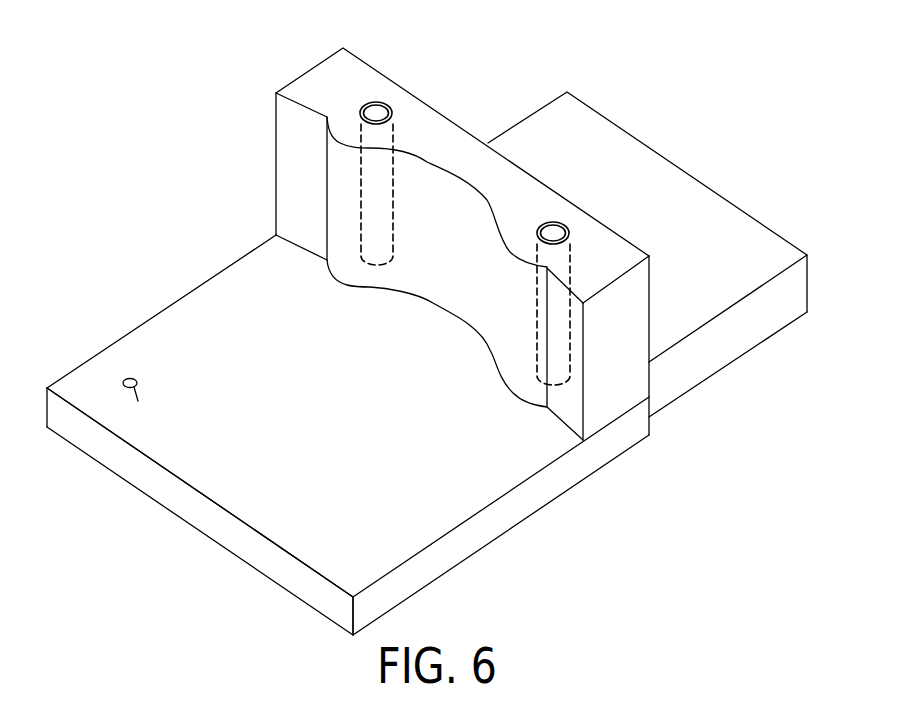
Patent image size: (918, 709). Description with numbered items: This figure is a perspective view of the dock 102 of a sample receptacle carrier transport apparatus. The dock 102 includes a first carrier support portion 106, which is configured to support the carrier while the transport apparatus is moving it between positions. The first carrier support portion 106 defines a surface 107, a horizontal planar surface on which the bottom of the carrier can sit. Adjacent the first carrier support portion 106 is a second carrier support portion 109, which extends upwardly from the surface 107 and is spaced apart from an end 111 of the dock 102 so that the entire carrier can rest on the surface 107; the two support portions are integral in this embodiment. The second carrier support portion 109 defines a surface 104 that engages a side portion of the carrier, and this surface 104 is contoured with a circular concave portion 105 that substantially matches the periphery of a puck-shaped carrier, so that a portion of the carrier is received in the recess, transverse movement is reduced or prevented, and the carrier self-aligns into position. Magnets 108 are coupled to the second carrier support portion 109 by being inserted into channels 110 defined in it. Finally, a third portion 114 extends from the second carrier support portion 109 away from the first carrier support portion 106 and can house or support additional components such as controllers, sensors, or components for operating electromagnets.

The dock 102 is at (108, 162).
The surface 104 is at (423, 253).
The concave portion 105 is at (347, 148).
The first carrier support portion 106 is at (347, 552).
The surface 107 is at (128, 375).
The magnets 108 is at (377, 110).
The second carrier support portion 109 is at (600, 272).
The channels 110 is at (397, 190).
The end 111 is at (137, 470).
The third portion 114 is at (633, 153).